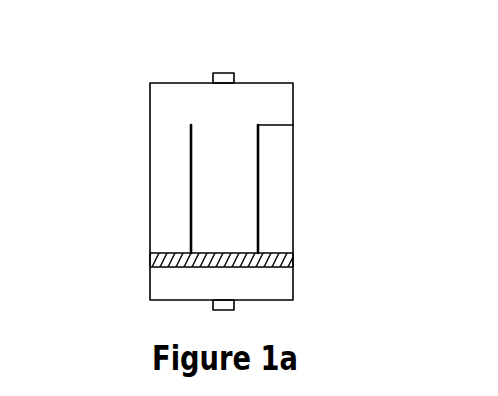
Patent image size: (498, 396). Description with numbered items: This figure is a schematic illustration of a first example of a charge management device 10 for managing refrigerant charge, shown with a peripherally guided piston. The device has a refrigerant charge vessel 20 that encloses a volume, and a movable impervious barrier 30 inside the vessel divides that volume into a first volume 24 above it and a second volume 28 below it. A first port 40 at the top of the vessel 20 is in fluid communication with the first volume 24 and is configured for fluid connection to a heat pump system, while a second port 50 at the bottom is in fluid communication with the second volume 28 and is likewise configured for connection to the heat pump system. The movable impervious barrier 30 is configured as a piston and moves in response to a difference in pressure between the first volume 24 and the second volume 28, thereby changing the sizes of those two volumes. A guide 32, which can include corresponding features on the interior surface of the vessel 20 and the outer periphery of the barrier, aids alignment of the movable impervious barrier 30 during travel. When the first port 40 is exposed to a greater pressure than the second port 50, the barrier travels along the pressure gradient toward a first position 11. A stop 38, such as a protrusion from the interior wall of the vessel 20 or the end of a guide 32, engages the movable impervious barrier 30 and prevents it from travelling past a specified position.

The charge management device 10 is at (133, 63).
The first position 11 is at (146, 263).
The refrigerant charge vessel 20 is at (152, 97).
The first volume 24 is at (209, 117).
The second volume 28 is at (209, 294).
The movable impervious barrier 30 is at (288, 262).
The guide 32 is at (190, 196).
The stop 38 is at (293, 125).
The first port 40 is at (234, 73).
The second port 50 is at (213, 307).